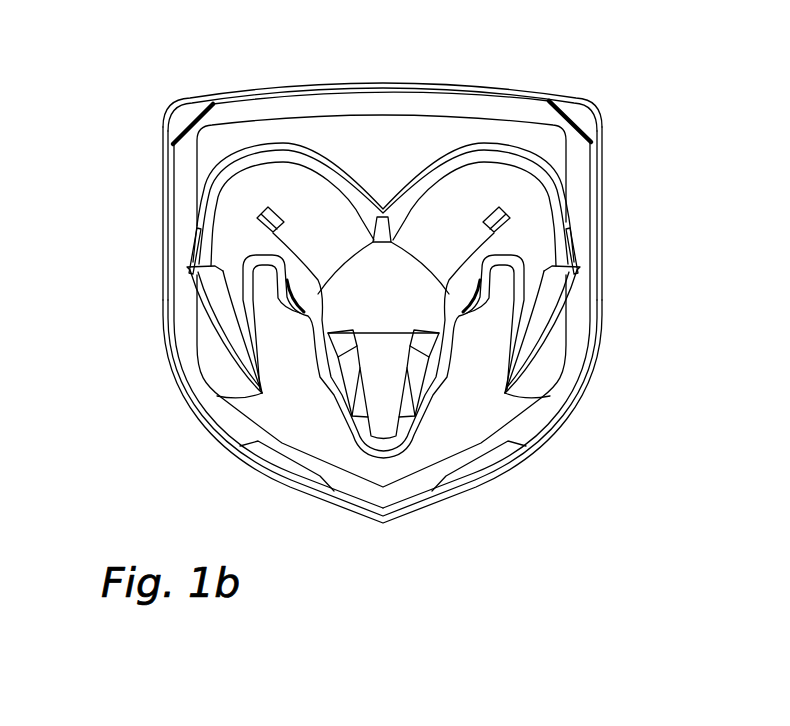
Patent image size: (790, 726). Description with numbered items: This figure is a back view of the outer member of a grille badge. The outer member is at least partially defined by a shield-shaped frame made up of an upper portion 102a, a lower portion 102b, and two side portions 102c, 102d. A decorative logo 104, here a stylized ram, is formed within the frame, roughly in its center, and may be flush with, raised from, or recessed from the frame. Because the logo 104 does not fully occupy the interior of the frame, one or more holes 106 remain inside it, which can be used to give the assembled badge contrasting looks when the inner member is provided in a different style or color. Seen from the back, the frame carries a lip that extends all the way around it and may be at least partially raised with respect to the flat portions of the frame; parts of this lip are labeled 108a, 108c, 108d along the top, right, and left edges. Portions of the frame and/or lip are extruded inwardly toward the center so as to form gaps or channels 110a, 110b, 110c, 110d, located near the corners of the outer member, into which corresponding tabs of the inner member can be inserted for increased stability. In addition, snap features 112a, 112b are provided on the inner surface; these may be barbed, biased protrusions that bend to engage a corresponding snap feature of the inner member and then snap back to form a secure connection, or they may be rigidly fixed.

The upper portion of frame 102a is at (313, 85).
The lower portion of frame 102b is at (398, 510).
The side portion of frame 102c is at (605, 275).
The side portion of frame 102d is at (158, 200).
The decorative logo 104 is at (260, 185).
The holes 106 is at (387, 150).
The lip 108a is at (257, 110).
The lip 108c is at (570, 367).
The lip 108d is at (197, 372).
The channel 110a is at (183, 117).
The channel 110b is at (577, 110).
The channel 110c is at (290, 474).
The channel 110d is at (465, 474).
The snap feature 112a is at (257, 219).
The snap feature 112b is at (510, 219).